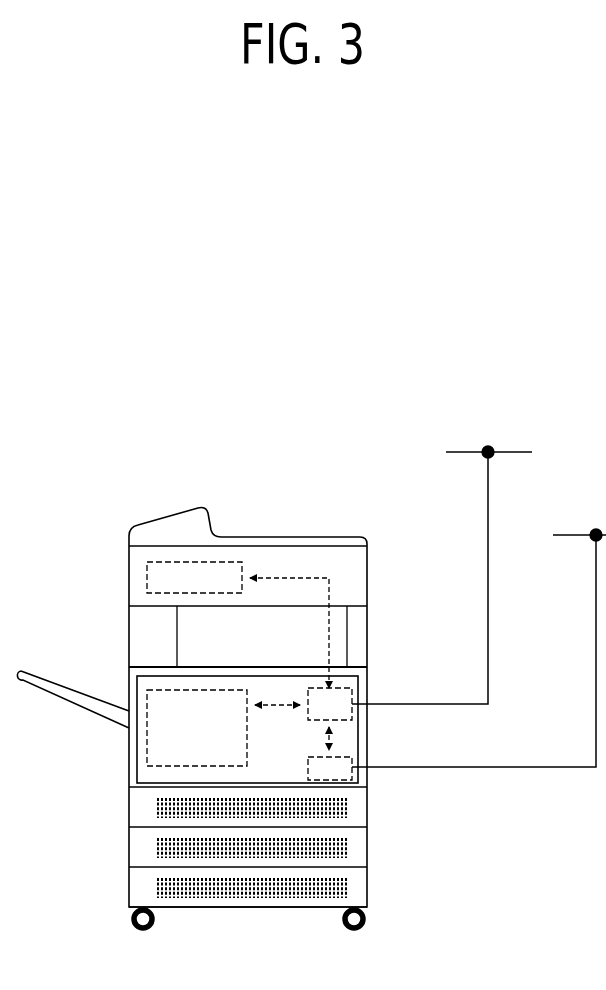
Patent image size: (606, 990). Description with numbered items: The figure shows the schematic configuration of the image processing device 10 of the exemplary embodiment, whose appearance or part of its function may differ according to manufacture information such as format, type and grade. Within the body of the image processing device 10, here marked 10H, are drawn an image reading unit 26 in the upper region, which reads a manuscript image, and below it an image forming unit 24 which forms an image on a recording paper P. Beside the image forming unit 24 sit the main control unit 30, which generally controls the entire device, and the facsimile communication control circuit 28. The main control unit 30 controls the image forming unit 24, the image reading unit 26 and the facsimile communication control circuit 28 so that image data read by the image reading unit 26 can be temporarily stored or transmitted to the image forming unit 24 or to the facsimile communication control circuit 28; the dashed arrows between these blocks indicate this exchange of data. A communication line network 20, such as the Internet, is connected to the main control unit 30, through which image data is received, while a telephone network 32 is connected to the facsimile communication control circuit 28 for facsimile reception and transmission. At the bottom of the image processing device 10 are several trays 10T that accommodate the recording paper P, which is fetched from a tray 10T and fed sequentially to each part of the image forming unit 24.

The image processing device 10 is at (140, 492).
The housing 10H is at (213, 667).
The tray 10T is at (355, 852).
The communication line network 20 is at (456, 451).
The image forming unit 24 is at (147, 740).
The image reading unit 26 is at (147, 580).
The facsimile communication control circuit 28 is at (352, 758).
The main control unit 30 is at (353, 697).
The telephone network 32 is at (567, 536).
The recording paper P is at (213, 820).